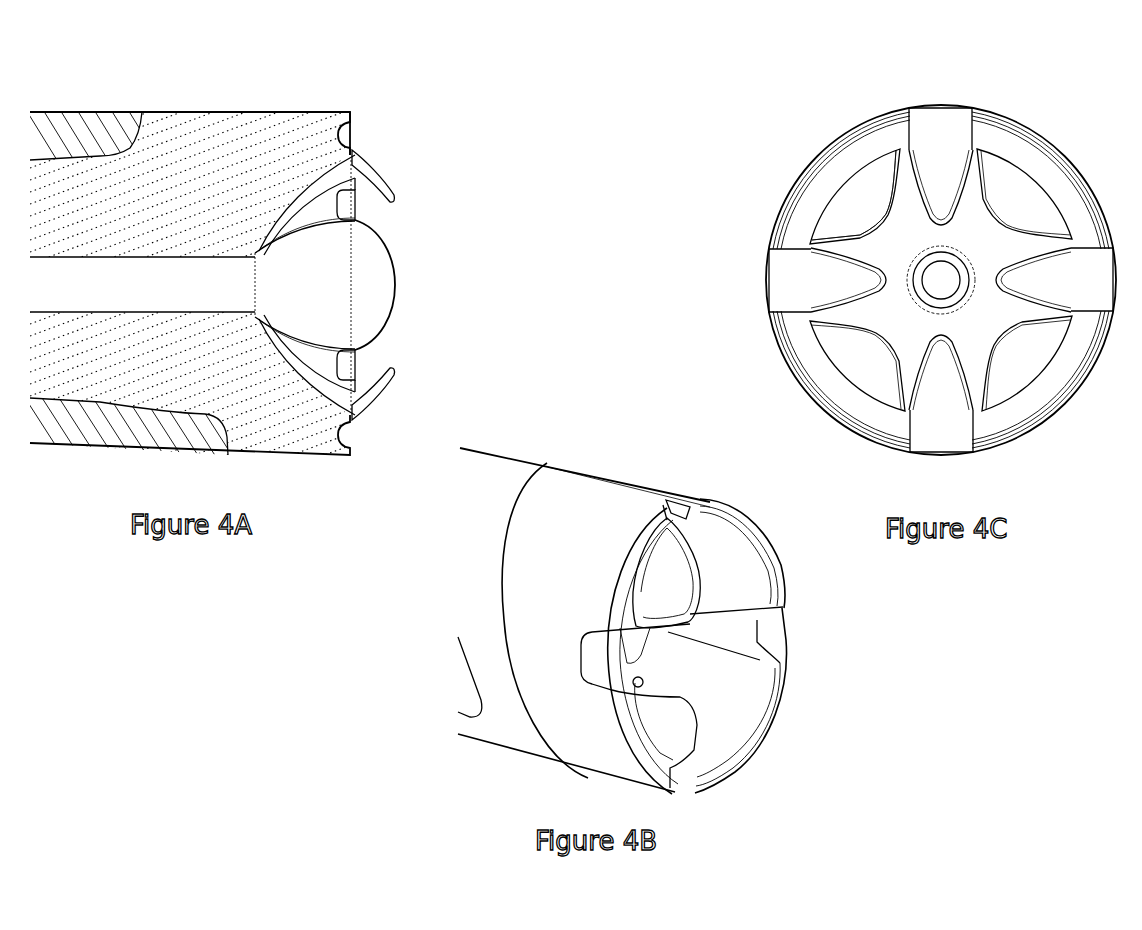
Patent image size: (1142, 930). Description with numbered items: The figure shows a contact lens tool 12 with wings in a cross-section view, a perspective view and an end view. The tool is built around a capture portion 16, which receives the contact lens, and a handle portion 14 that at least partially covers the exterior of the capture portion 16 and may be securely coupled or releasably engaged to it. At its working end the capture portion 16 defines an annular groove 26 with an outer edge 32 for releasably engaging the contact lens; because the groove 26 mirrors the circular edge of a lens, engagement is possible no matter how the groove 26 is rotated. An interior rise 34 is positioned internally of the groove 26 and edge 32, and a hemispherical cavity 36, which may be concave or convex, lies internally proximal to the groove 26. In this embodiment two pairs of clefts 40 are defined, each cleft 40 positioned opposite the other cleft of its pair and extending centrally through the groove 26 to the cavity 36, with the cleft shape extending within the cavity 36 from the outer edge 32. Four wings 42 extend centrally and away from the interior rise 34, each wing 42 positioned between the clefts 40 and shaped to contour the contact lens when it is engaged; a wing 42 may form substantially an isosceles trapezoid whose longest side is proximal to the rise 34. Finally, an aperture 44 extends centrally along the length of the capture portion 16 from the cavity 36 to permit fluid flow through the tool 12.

In FIG. 4A, the contact lens tool 12 is at (168, 82).
In FIG. 4B, the contact lens tool 12 is at (592, 443).
In FIG. 4C, the contact lens tool 12 is at (739, 146).
In FIG. 4A, the handle portion 14 is at (136, 280).
In FIG. 4B, the handle portion 14 is at (481, 595).
In FIG. 4A, the capture portion 16 is at (215, 294).
In FIG. 4B, the capture portion 16 is at (584, 620).
In FIG. 4A, the annular groove 26 is at (352, 130).
In FIG. 4B, the annular groove 26 is at (636, 592).
In FIG. 4C, the annular groove 26 is at (893, 133).
In FIG. 4A, the outer edge 32 is at (352, 118).
In FIG. 4B, the outer edge 32 is at (663, 505).
In FIG. 4C, the outer edge 32 is at (846, 132).
In FIG. 4A, the interior rise 34 is at (357, 153).
In FIG. 4B, the interior rise 34 is at (684, 543).
In FIG. 4C, the interior rise 34 is at (989, 142).
In FIG. 4A, the hemispherical cavity 36 is at (325, 285).
In FIG. 4B, the hemispherical cavity 36 is at (646, 706).
In FIG. 4C, the hemispherical cavity 36 is at (941, 280).
In FIG. 4B, the cleft 40 is at (725, 635).
In FIG. 4C, the cleft 40 is at (941, 280).
In FIG. 4A, the wing 42 is at (396, 268).
In FIG. 4B, the wing 42 is at (666, 573).
In FIG. 4C, the wing 42 is at (941, 280).
In FIG. 4A, the aperture 44 is at (142, 284).
In FIG. 4C, the aperture 44 is at (941, 280).